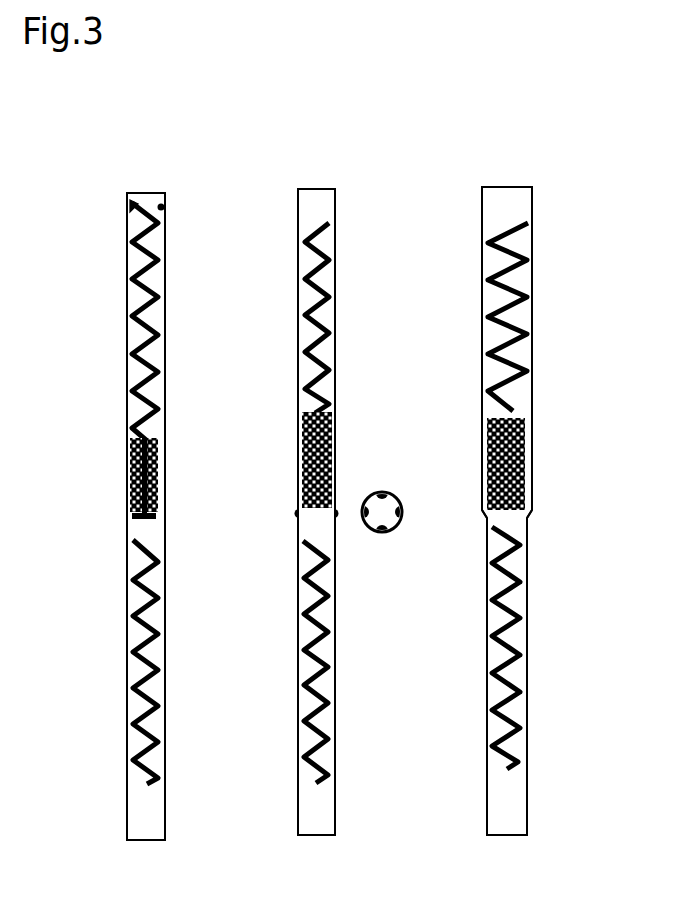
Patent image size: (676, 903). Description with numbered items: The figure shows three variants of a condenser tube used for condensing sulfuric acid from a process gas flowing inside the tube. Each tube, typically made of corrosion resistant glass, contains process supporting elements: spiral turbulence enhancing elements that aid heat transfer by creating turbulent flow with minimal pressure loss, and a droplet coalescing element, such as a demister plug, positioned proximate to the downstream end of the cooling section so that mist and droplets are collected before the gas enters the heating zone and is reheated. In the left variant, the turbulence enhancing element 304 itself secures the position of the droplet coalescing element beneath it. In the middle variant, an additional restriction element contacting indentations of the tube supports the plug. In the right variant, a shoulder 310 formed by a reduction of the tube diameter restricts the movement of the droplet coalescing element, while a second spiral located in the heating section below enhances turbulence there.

The turbulence enhancing element 304 is at (136, 305).
The shoulder 310 is at (485, 512).